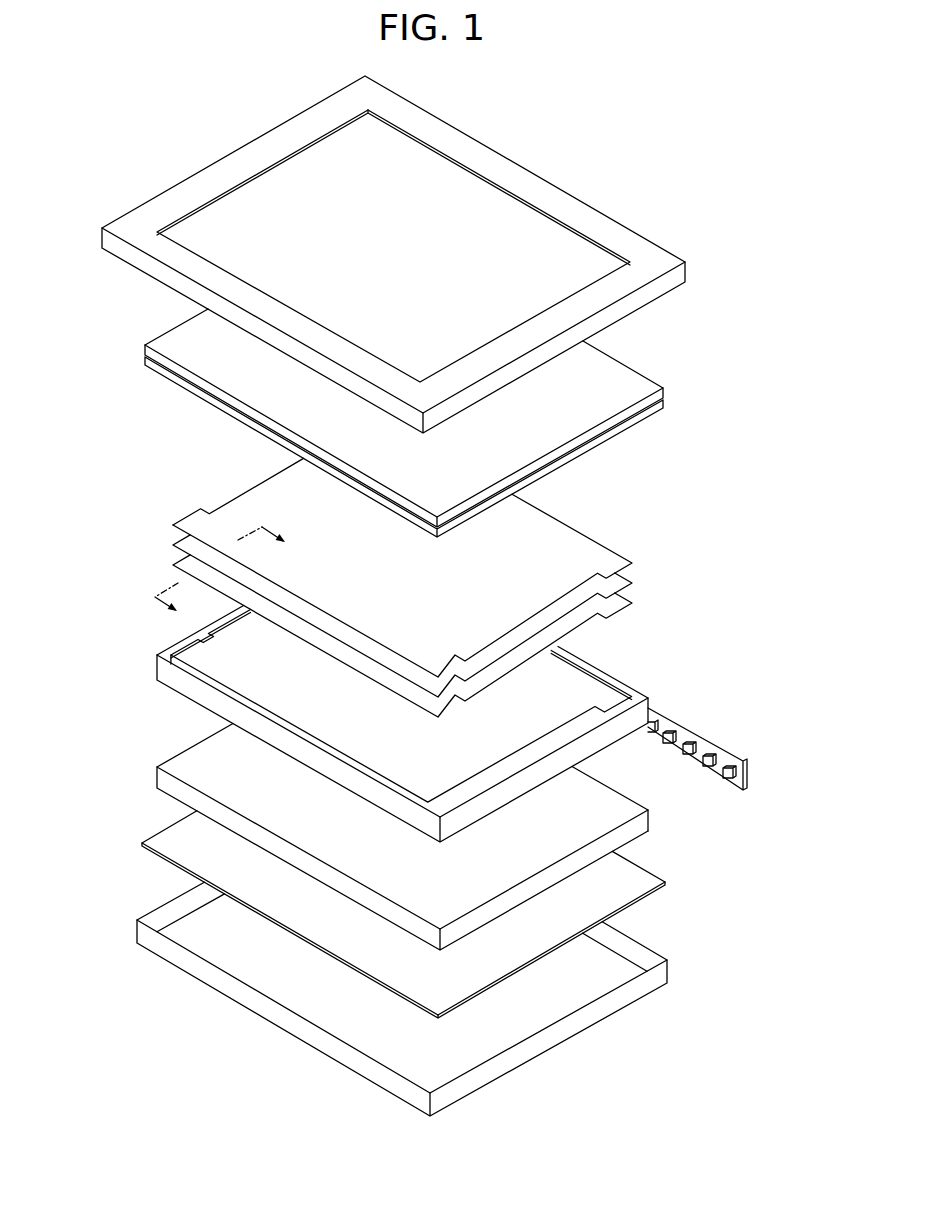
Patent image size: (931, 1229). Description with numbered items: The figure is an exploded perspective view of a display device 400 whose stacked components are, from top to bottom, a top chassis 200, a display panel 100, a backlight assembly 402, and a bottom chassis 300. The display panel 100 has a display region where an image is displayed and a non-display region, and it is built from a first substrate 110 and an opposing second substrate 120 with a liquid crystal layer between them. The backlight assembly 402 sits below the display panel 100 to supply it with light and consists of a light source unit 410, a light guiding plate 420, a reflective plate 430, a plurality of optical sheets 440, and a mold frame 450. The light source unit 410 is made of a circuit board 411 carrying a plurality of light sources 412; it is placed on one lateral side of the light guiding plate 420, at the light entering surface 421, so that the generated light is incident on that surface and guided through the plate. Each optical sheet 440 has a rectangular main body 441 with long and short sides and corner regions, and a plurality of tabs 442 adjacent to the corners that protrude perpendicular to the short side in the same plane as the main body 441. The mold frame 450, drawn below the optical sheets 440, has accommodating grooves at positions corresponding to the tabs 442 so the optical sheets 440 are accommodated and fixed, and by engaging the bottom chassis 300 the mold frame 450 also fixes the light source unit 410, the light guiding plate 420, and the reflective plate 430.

The display device 400 is at (632, 88).
The top chassis 200 is at (638, 237).
The display panel 100 is at (471, 423).
The first substrate 110 is at (647, 383).
The second substrate 120 is at (647, 404).
The backlight assembly 402 is at (80, 505).
The optical sheets 440 is at (426, 587).
The main body 441 is at (243, 507).
The tabs 442 is at (617, 605).
The mold frame 450 is at (157, 655).
The light source unit 410 is at (754, 749).
The circuit board 411 is at (725, 748).
The light sources 412 is at (747, 778).
The light guiding plate 420 is at (409, 837).
The light entering surface 421 is at (650, 812).
The reflective plate 430 is at (647, 879).
The bottom chassis 300 is at (667, 962).